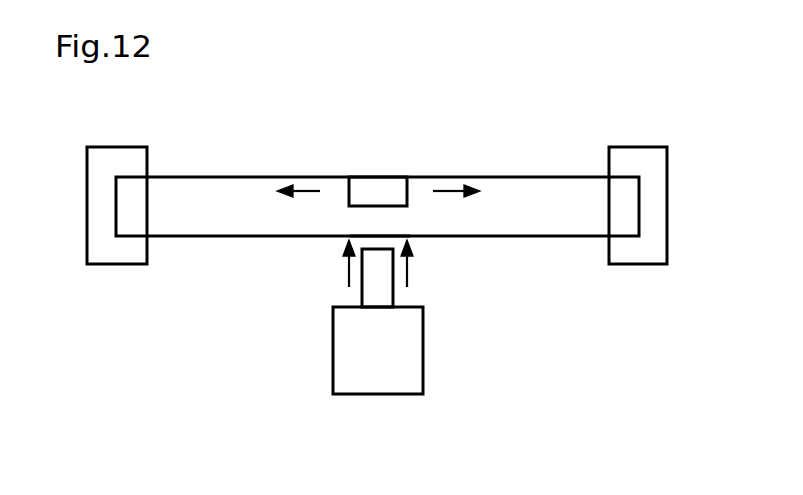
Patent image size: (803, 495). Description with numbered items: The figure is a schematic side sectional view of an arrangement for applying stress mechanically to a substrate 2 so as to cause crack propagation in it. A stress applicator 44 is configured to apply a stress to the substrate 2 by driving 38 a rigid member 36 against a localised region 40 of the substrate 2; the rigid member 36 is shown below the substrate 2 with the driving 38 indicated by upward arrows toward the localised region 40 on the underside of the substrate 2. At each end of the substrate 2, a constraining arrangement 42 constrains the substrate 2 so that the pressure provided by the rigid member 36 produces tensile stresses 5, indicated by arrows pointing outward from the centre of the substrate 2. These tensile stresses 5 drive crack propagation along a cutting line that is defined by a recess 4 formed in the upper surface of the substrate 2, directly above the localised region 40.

The substrate 2 is at (542, 197).
The recess 4 is at (388, 191).
The tensile stress 5 is at (310, 190).
The rigid member 36 is at (375, 299).
The driving 38 is at (409, 275).
The localised region 40 is at (380, 235).
The constraining arrangement 42 is at (127, 165).
The stress applicator 44 is at (443, 330).